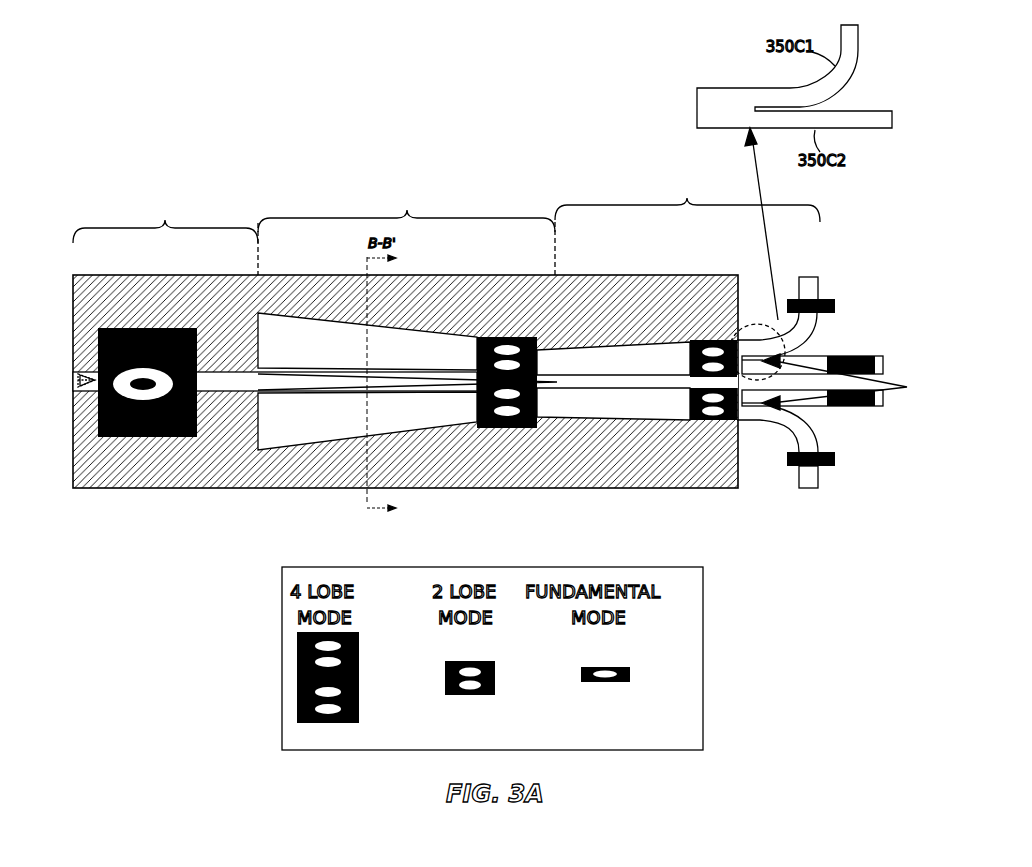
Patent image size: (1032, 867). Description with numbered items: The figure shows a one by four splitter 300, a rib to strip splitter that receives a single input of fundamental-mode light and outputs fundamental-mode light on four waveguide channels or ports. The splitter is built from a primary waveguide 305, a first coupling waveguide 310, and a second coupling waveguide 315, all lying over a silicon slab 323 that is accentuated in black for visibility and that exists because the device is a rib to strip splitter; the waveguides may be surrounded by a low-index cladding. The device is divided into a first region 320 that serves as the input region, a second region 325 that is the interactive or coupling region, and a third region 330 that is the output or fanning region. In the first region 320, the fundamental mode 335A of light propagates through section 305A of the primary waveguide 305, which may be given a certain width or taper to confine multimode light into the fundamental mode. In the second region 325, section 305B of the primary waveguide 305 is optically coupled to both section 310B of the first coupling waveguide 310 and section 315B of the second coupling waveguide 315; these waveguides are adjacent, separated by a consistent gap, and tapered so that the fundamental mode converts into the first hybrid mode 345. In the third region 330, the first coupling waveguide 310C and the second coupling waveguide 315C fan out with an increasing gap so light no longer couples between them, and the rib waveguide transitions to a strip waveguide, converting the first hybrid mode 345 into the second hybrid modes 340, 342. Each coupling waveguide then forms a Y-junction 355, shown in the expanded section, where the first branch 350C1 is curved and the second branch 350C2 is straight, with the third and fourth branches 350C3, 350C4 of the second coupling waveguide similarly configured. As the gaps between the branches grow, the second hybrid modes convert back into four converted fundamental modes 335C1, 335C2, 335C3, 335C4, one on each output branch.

The one by four splitter 300 is at (114, 200).
The primary waveguide 305 is at (223, 370).
The section of the primary waveguide 305A is at (73, 378).
The section of the primary waveguide 305B is at (337, 393).
The first coupling waveguide 310 is at (312, 342).
The section of the first coupling waveguide 310B is at (440, 352).
The first coupling waveguide 310C is at (627, 343).
The second coupling waveguide 315 is at (273, 437).
The section of the second coupling waveguide 315B is at (417, 432).
The second coupling waveguide 315C is at (612, 420).
The first region 320 is at (165, 238).
The silicon slab 323 is at (568, 300).
The second region 325 is at (406, 230).
The third region 330 is at (687, 199).
The fundamental mode 335A is at (142, 328).
The converted fundamental mode 335C1 is at (835, 306).
The converted fundamental mode 335C2 is at (866, 358).
The converted fundamental mode 335C3 is at (866, 407).
The converted fundamental mode 335C4 is at (835, 462).
The second hybrid mode 340 is at (703, 340).
The second hybrid mode 342 is at (700, 420).
The first hybrid mode 345 is at (512, 340).
The first branch 350C1 is at (808, 277).
The second branch 350C2 is at (805, 357).
The third branch 350C3 is at (805, 407).
The fourth branch 350C4 is at (808, 488).
The Y-junction 355 is at (858, 382).